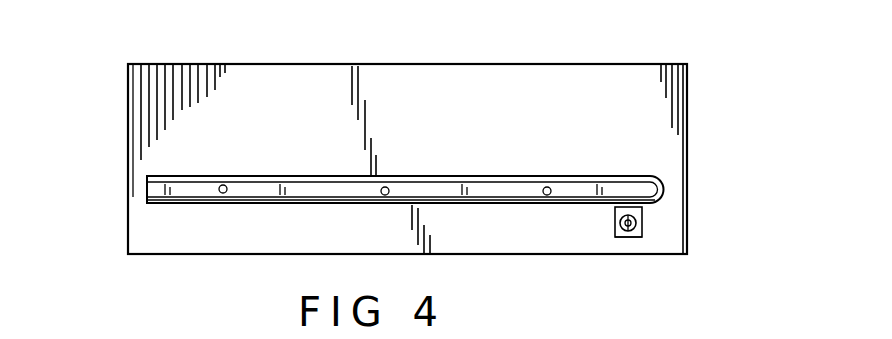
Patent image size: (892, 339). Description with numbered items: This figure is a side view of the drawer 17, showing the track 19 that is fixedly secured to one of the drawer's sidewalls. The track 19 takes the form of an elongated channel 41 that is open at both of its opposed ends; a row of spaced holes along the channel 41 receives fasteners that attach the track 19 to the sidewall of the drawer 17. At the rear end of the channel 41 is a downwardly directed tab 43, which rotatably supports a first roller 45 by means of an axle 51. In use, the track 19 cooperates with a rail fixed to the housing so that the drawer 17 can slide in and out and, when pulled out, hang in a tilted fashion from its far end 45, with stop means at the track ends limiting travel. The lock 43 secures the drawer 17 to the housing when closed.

The drawer 17 is at (128, 80).
The track 19 is at (474, 172).
The elongated channel 41 is at (203, 187).
The downwardly directed tab 43 is at (642, 211).
The first roller 45 is at (688, 104).
The axle 51 is at (643, 225).